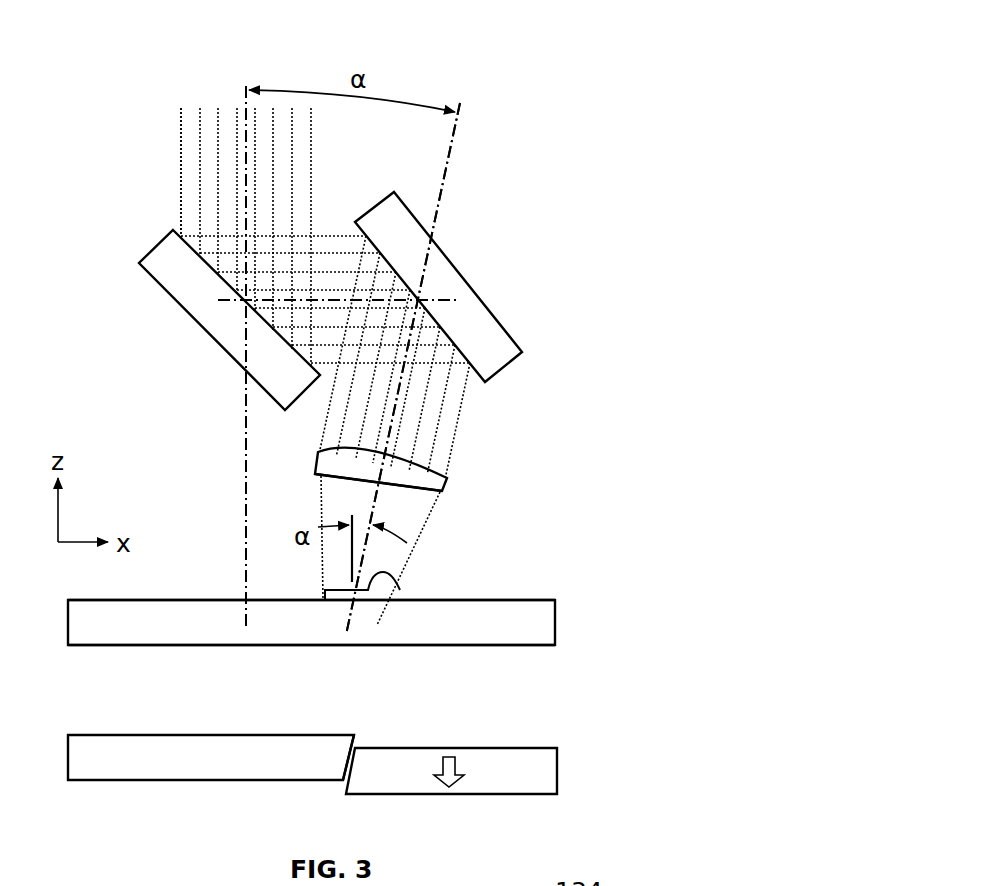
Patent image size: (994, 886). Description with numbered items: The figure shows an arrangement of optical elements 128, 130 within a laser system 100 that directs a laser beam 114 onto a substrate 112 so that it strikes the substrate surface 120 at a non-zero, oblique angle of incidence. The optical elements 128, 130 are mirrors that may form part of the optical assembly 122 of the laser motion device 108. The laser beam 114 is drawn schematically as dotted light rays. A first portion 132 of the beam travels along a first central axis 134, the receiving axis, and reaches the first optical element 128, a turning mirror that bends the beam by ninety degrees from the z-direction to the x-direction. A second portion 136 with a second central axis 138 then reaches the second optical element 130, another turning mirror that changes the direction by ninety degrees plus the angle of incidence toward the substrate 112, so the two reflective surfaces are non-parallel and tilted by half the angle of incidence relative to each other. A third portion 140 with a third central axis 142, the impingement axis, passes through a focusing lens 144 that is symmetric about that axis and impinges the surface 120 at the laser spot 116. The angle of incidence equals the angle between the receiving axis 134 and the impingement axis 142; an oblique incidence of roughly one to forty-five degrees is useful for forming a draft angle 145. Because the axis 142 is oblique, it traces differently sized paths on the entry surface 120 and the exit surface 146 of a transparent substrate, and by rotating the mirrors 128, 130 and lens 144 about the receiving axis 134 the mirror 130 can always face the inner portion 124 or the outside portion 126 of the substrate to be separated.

The laser system 100 is at (606, 87).
The laser motion device 108 is at (534, 139).
The substrate 112 is at (557, 605).
The laser beam 114 is at (180, 140).
The laser spot 116 is at (400, 590).
The substrate surface 120 is at (508, 600).
The optical assembly 122 is at (483, 192).
The inner portion of the substrate 124 is at (215, 645).
The outside portion of the substrate 126 is at (498, 645).
The first optical element 128 is at (160, 284).
The second optical element 130 is at (493, 316).
The first portion of the laser beam 132 is at (189, 202).
The first central axis 134 is at (245, 107).
The second portion of the laser beam 136 is at (338, 242).
The second central axis 138 is at (445, 298).
The third portion of the laser beam 140 is at (451, 409).
The third central axis 142 is at (394, 417).
The focusing lens 144 is at (428, 490).
The draft angle 145 is at (353, 748).
The second surface of the substrate 146 is at (118, 646).